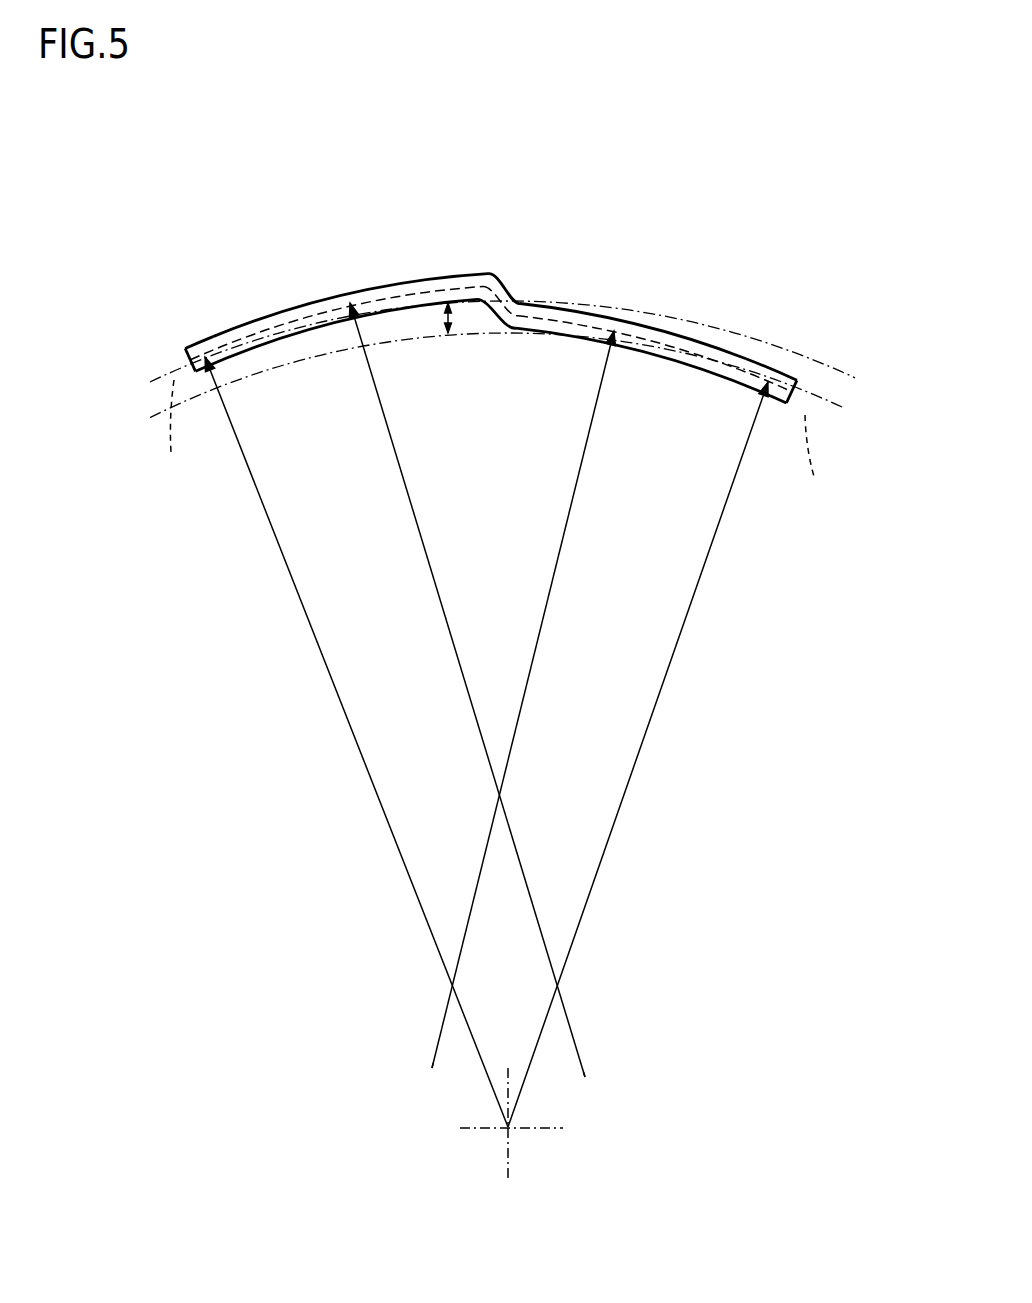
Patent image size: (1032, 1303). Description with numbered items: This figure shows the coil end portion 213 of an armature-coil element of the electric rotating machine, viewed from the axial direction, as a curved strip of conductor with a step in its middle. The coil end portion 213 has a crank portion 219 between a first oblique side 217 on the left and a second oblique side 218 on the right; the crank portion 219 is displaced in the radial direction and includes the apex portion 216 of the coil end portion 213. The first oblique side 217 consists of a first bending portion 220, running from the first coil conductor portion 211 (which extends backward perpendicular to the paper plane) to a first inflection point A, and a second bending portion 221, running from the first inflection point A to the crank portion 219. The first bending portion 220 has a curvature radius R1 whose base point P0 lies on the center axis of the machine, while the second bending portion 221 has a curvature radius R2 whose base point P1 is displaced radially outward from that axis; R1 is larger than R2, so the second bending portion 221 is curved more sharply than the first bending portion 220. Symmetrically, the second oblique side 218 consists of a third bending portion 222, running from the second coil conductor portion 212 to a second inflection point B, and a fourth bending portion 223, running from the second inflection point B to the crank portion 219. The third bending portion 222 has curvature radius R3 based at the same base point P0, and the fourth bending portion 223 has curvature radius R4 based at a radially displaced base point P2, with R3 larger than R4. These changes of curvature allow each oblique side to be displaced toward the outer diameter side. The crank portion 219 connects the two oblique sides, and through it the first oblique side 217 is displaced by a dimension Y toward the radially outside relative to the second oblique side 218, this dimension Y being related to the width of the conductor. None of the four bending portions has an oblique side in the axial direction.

The first coil conductor portion 211 is at (174, 436).
The second coil conductor portion 212 is at (839, 458).
The coil end portion 213 is at (500, 167).
The apex portion 216 is at (502, 287).
The first oblique side 217 is at (463, 163).
The second oblique side 218 is at (838, 240).
The crank portion 219 is at (517, 338).
The first bending portion 220 is at (183, 350).
The second bending portion 221 is at (374, 287).
The third bending portion 222 is at (797, 378).
The fourth bending portion 223 is at (655, 328).
The first inflection point A is at (213, 336).
The second inflection point B is at (746, 357).
The dimension Y is at (445, 318).
The curvature radius R1 is at (356, 742).
The curvature radius R2 is at (467, 690).
The curvature radius R3 is at (638, 754).
The curvature radius R4 is at (535, 699).
The base point P0 is at (511, 1124).
The base point P1 is at (602, 1092).
The base point P2 is at (417, 1084).